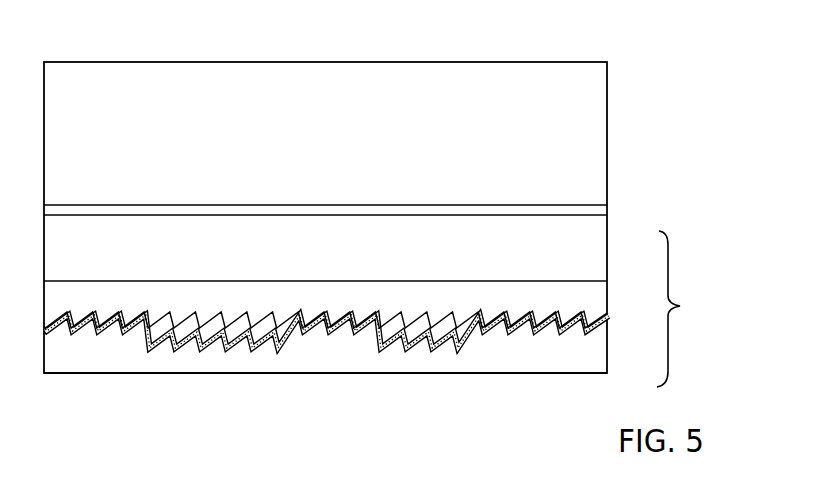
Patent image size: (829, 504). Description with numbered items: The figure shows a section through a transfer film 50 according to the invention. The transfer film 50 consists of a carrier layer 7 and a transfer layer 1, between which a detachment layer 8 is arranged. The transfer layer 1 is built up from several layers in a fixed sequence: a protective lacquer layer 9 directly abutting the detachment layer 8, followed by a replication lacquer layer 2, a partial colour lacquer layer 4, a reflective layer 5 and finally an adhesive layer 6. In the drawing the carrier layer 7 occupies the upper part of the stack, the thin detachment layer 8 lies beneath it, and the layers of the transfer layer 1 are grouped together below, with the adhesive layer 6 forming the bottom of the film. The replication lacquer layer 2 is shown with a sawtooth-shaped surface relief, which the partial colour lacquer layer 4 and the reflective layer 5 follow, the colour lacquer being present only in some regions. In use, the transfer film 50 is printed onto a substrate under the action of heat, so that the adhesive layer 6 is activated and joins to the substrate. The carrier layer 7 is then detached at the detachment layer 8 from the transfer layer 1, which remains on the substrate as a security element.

The transfer film 50 is at (564, 56).
The carrier layer 7 is at (607, 131).
The detachment layer 8 is at (607, 210).
The protective lacquer layer 9 is at (607, 248).
The replication lacquer layer 2 is at (607, 297).
The reflective layer 5 is at (607, 325).
The partial colour lacquer layer 4 is at (489, 341).
The adhesive layer 6 is at (607, 357).
The transfer layer 1 is at (683, 309).